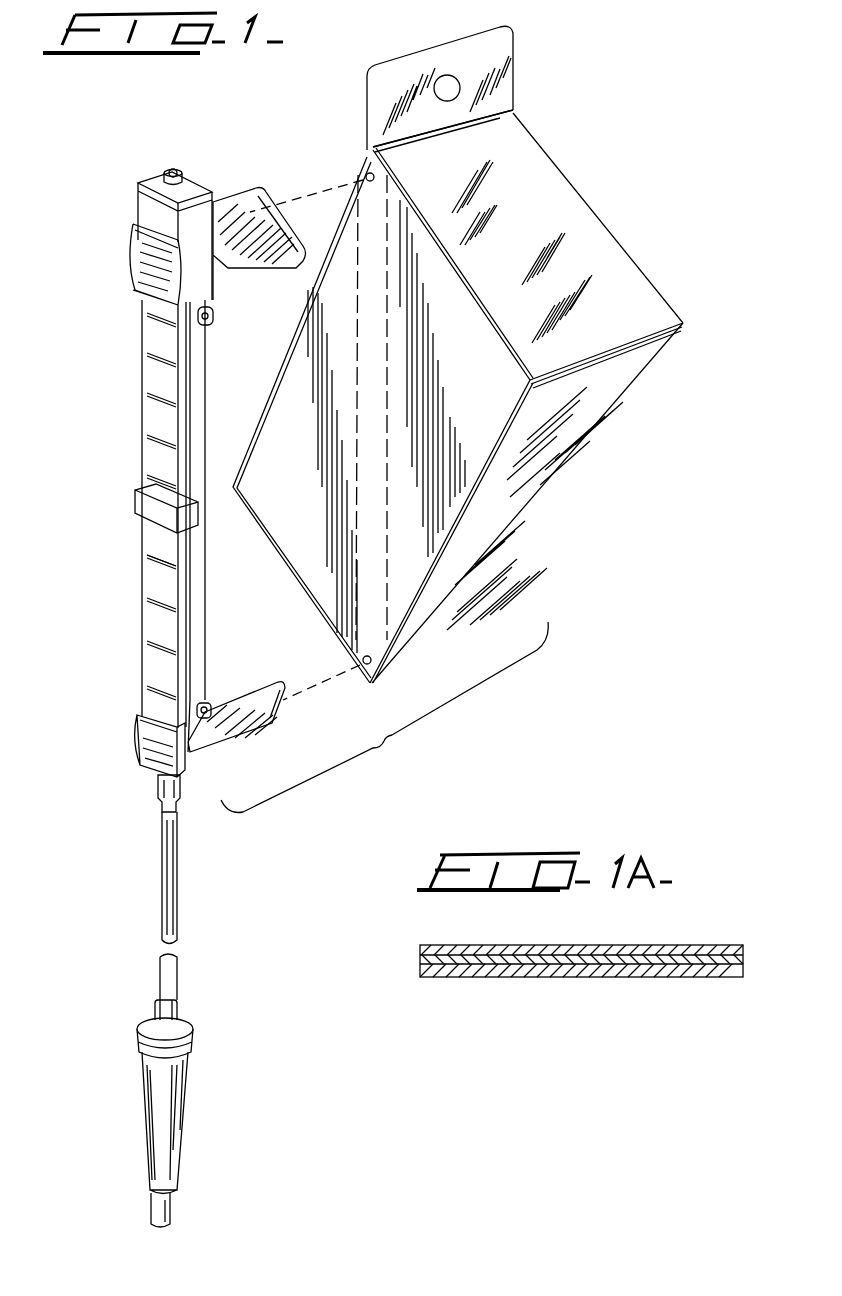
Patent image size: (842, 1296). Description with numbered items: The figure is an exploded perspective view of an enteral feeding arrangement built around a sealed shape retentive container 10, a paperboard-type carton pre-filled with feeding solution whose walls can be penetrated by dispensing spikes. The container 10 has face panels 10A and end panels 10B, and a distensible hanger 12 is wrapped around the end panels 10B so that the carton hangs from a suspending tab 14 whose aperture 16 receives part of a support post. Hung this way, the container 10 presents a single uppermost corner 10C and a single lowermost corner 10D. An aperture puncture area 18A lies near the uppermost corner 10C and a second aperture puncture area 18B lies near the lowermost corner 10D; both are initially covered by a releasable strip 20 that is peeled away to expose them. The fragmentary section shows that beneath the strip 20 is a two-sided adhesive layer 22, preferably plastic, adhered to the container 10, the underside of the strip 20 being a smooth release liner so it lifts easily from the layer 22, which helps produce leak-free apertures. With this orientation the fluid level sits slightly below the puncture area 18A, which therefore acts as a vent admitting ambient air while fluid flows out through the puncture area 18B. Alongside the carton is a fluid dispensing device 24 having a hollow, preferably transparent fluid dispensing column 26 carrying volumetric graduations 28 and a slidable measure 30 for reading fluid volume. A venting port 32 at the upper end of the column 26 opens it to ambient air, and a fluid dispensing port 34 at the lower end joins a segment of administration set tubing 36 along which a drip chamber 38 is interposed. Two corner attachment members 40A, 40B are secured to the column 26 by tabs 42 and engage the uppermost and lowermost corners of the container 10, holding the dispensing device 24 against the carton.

In FIG. 1, the shape retentive container 10 is at (468, 409).
In FIG. 1A, the shape retentive container 10 is at (597, 956).
In FIG. 1, the face panels 10A is at (285, 407).
In FIG. 1, the end panels 10B is at (630, 313).
In FIG. 1, the uppermost corner 10C is at (513, 110).
In FIG. 1, the lowermost corner 10D is at (423, 658).
In FIG. 1, the distensible hanger 12 is at (577, 190).
In FIG. 1, the suspending tab 14 is at (462, 79).
In FIG. 1, the aperture 16 is at (444, 78).
In FIG. 1, the aperture puncture area 18A is at (363, 173).
In FIG. 1, the aperture puncture area 18B is at (362, 664).
In FIG. 1, the releasable strip 20 is at (378, 492).
In FIG. 1A, the releasable strip 20 is at (748, 950).
In FIG. 1A, the two-sided adhesive layer 22 is at (748, 958).
In FIG. 1, the fluid dispensing device 24 is at (175, 684).
In FIG. 1, the fluid dispensing column 26 is at (142, 612).
In FIG. 1, the volumetric graduations 28 is at (140, 553).
In FIG. 1, the slidable measure 30 is at (135, 506).
In FIG. 1, the venting port 32 is at (165, 178).
In FIG. 1, the fluid dispensing port 34 is at (158, 787).
In FIG. 1, the administration set tubing 36 is at (162, 887).
In FIG. 1, the drip chamber 38 is at (147, 1090).
In FIG. 1, the corner attachment member 40A is at (228, 235).
In FIG. 1, the corner attachment member 40B is at (240, 737).
In FIG. 1, the tabs 42 is at (207, 324).